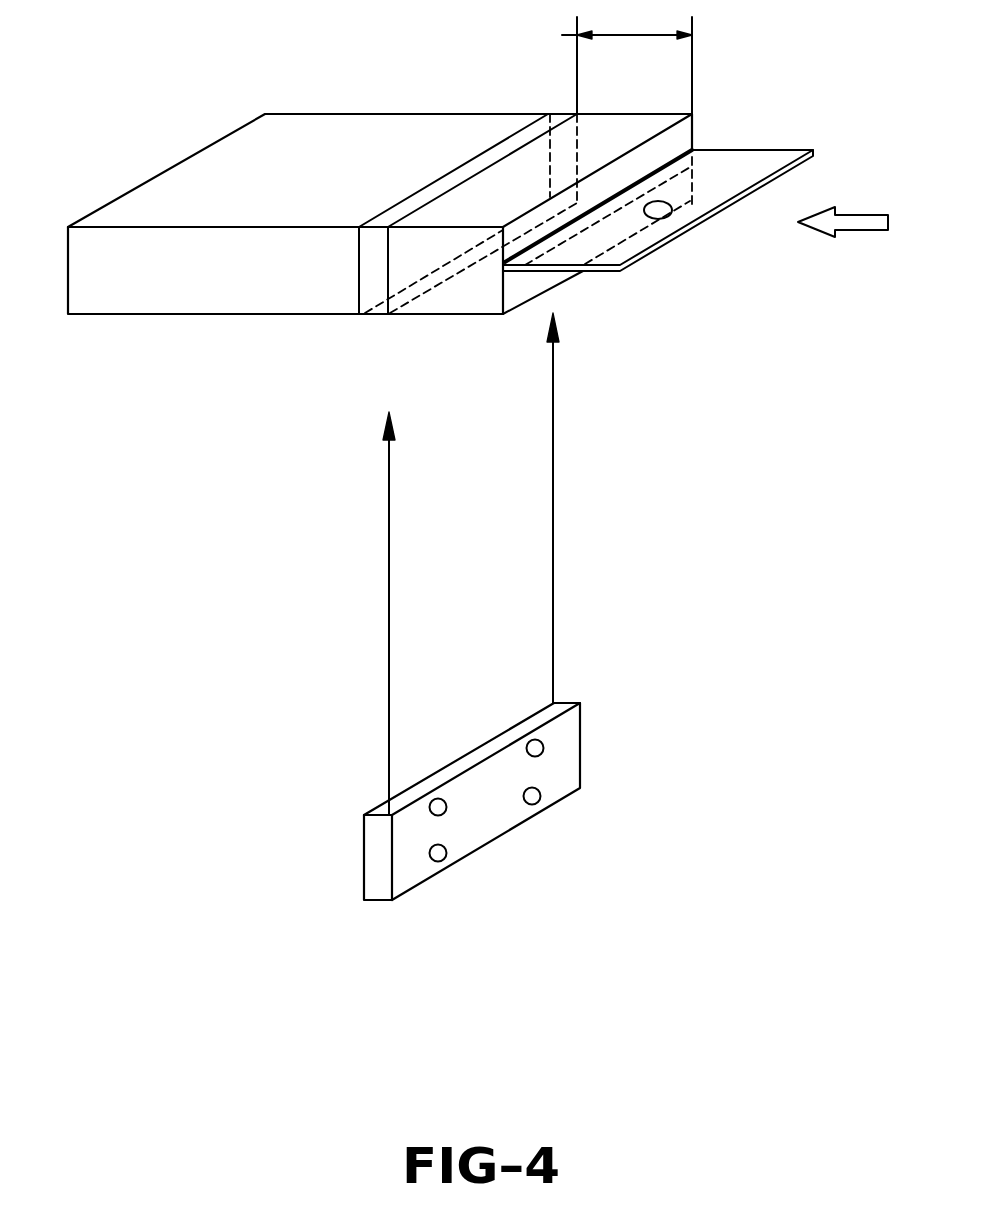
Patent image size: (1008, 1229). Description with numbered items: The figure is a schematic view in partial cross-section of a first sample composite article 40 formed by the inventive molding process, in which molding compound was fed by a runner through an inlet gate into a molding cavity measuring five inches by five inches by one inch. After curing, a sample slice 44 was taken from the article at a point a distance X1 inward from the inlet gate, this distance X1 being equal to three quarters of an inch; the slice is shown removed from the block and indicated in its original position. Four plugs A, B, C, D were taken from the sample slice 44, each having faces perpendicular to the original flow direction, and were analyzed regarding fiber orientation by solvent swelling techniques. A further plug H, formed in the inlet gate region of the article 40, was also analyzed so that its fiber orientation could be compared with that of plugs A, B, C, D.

The composite article 40 is at (329, 133).
The sample slice 44 is at (514, 783).
The plug H is at (672, 208).
The plug A is at (446, 798).
The plug B is at (440, 862).
The plug C is at (538, 740).
The plug D is at (533, 805).
The distance X1 is at (610, 65).